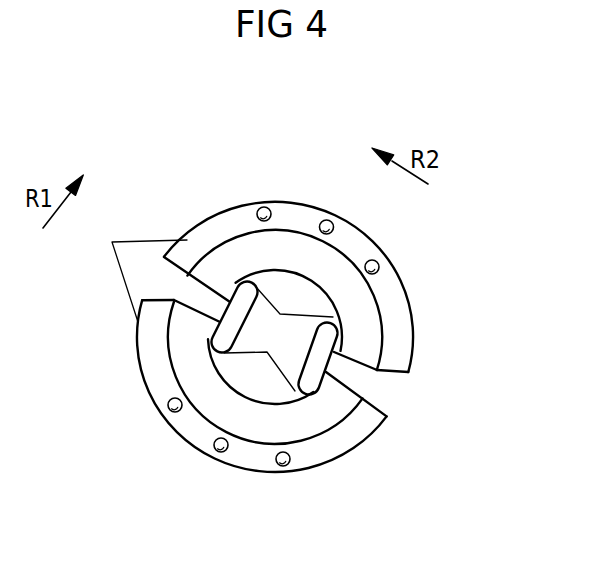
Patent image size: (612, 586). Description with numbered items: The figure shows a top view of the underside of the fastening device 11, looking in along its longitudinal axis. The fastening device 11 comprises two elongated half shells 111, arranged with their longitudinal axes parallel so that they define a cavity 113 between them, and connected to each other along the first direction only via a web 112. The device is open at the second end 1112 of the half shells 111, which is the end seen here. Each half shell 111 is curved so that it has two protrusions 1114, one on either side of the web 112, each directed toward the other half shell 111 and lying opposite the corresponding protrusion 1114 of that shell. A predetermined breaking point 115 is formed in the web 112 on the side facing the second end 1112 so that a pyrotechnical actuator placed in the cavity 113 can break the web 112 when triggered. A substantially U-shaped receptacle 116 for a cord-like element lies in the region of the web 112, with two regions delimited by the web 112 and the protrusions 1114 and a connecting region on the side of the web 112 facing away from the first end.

The fastening device 11 is at (152, 177).
The half shell 111 is at (306, 340).
The second end 1112 is at (222, 226).
The protrusion 1114 is at (125, 240).
The web 112 is at (283, 379).
The cavity 113 is at (257, 380).
The predetermined breaking point 115 is at (271, 332).
The receptacle 116 is at (214, 348).